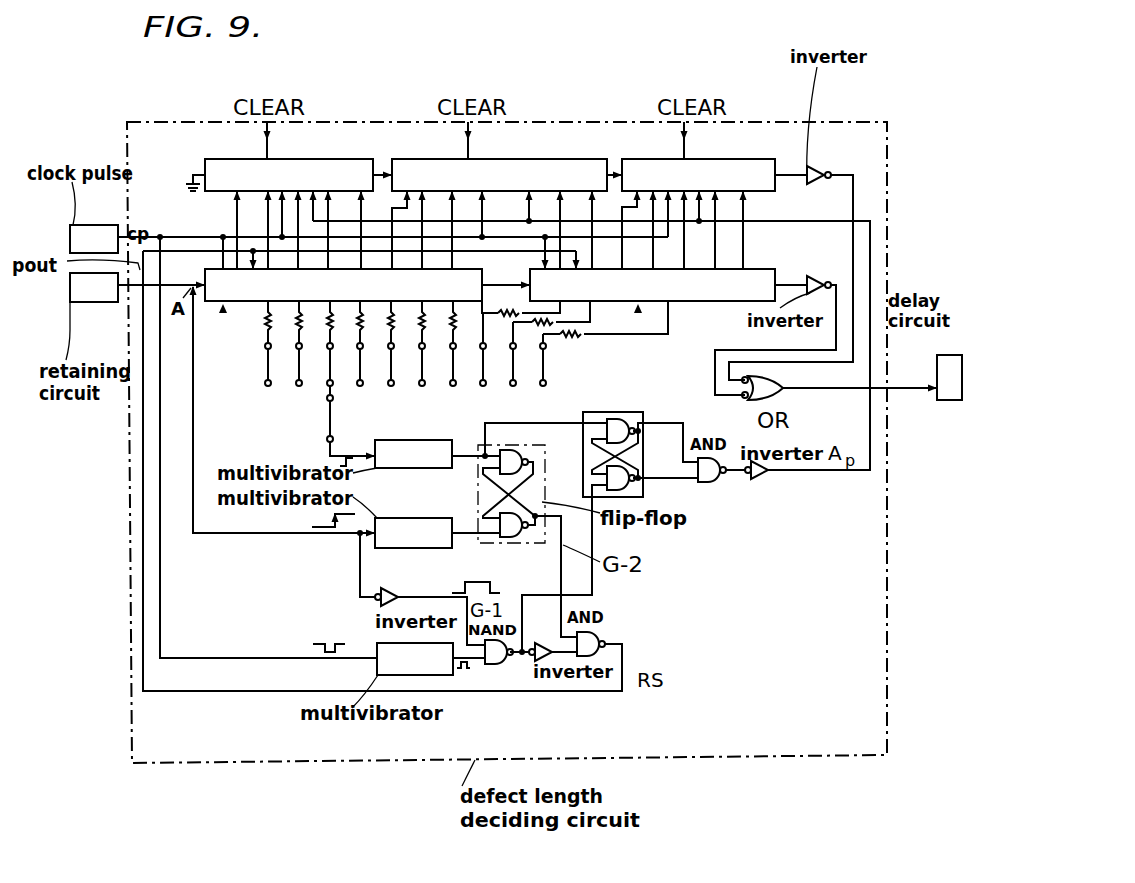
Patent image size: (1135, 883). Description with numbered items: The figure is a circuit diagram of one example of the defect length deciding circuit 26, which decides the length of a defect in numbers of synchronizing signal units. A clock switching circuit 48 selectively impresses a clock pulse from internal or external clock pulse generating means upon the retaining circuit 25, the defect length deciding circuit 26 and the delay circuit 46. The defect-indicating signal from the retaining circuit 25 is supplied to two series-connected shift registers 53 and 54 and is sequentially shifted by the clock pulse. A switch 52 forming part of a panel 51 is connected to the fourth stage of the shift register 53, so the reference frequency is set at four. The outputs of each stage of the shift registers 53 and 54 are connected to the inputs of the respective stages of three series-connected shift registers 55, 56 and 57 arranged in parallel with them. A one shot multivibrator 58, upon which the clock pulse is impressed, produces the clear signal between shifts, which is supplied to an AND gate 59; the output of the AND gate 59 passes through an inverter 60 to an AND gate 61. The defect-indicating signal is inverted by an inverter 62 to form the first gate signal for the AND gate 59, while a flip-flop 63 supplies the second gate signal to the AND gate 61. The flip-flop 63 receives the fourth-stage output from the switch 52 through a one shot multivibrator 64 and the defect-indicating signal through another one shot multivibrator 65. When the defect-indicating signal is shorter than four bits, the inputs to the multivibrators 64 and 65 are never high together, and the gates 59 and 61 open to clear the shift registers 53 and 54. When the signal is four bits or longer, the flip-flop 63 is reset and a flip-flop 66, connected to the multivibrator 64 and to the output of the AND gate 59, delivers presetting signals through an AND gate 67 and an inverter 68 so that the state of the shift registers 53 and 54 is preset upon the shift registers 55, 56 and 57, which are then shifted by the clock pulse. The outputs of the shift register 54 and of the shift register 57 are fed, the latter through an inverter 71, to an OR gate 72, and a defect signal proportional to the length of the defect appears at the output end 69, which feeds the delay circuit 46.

The retaining circuit 25 is at (106, 302).
The defect length deciding circuit 26 is at (713, 757).
The delay circuit 46 is at (950, 400).
The clock switching circuit 48 is at (118, 226).
The panel 51 is at (255, 345).
The switch 52 is at (333, 392).
The shift register 53 is at (245, 302).
The shift register 54 is at (698, 302).
The shift register 55 is at (342, 159).
The shift register 56 is at (550, 159).
The shift register 57 is at (748, 159).
The one shot multivibrator 58 is at (377, 643).
The AND gate 59 is at (503, 665).
The inverter 60 is at (545, 661).
The AND gate 61 is at (592, 628).
The inverter 62 is at (393, 586).
The flip-flop 63 is at (528, 445).
The one shot multivibrator 64 is at (413, 440).
The one shot multivibrator 65 is at (413, 518).
The flip-flop 66 is at (617, 412).
The AND gate 67 is at (708, 482).
The inverter 68 is at (760, 479).
The output end 69 is at (860, 375).
The inverter 71 is at (818, 166).
The OR gate 72 is at (775, 382).